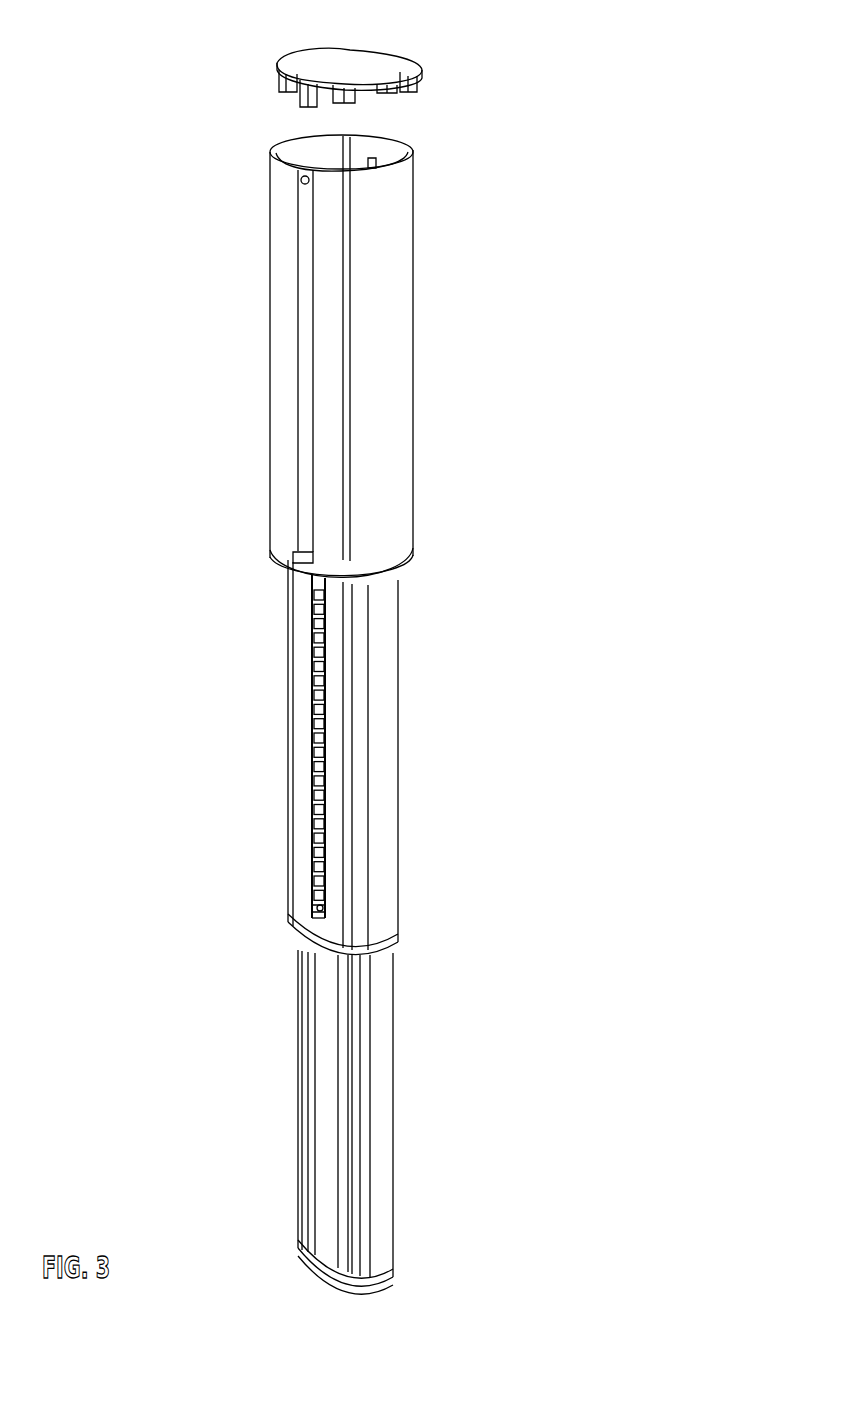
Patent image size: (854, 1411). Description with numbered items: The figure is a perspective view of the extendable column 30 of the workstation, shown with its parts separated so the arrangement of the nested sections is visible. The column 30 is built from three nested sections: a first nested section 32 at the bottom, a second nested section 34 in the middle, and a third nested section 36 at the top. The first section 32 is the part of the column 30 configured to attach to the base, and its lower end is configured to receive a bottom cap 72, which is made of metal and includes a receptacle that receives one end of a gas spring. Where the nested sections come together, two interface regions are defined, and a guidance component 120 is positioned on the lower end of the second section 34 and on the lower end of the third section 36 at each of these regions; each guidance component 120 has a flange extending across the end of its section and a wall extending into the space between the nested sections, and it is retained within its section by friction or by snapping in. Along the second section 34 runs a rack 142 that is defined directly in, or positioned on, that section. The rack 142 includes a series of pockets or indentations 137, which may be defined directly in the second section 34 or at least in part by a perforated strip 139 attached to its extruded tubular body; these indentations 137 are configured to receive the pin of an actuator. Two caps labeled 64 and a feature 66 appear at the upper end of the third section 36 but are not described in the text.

The extendable column 30 is at (248, 493).
The first nested section 32 is at (357, 1122).
The second nested section 34 is at (326, 753).
The third nested section 36 is at (383, 342).
The end cap 64 is at (400, 70).
The cap retention tab 66 is at (370, 163).
The bottom cap 72 is at (385, 1282).
The guidance component 120 is at (268, 553).
The indentations 137 is at (315, 748).
The perforated strip 139 is at (313, 815).
The rack 142 is at (318, 680).